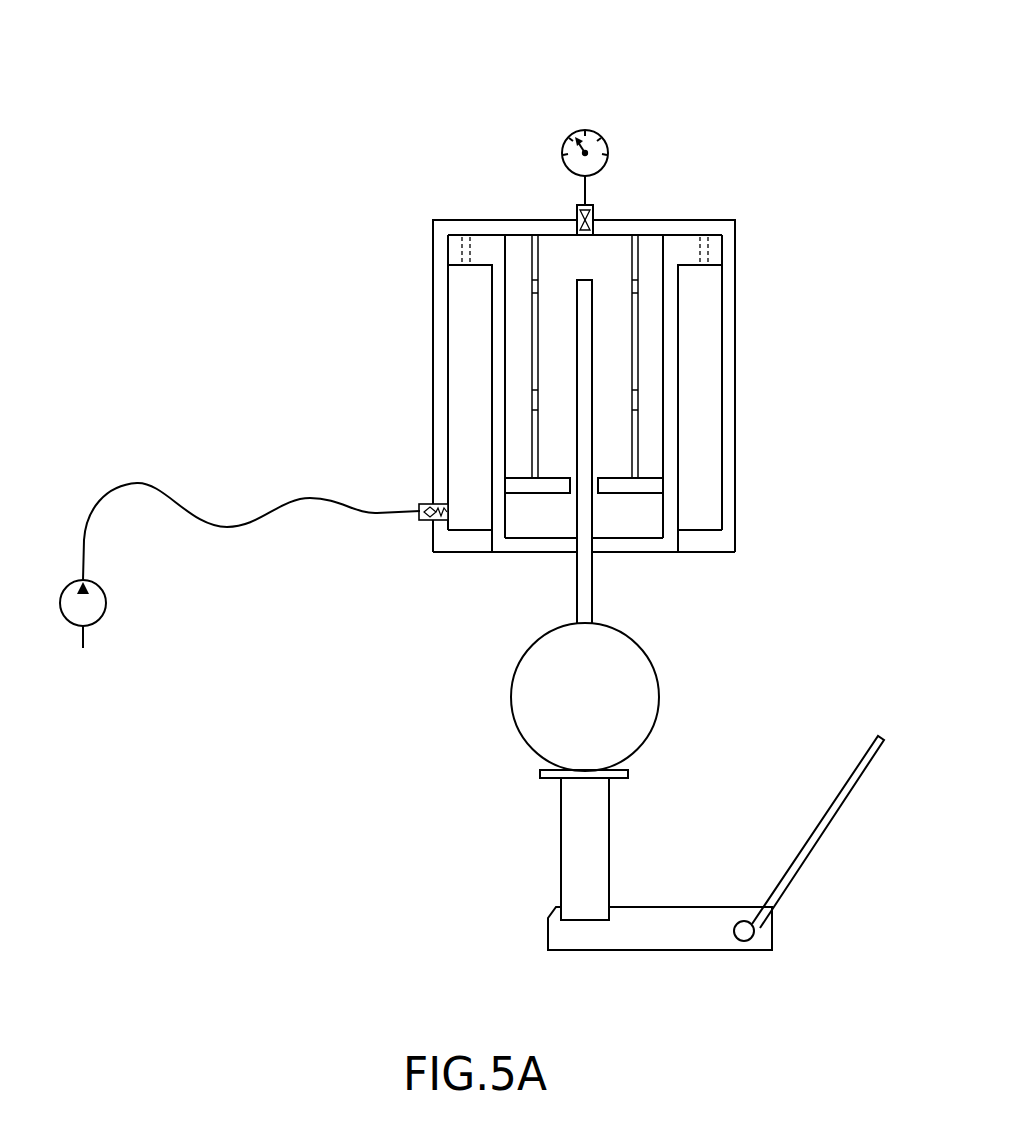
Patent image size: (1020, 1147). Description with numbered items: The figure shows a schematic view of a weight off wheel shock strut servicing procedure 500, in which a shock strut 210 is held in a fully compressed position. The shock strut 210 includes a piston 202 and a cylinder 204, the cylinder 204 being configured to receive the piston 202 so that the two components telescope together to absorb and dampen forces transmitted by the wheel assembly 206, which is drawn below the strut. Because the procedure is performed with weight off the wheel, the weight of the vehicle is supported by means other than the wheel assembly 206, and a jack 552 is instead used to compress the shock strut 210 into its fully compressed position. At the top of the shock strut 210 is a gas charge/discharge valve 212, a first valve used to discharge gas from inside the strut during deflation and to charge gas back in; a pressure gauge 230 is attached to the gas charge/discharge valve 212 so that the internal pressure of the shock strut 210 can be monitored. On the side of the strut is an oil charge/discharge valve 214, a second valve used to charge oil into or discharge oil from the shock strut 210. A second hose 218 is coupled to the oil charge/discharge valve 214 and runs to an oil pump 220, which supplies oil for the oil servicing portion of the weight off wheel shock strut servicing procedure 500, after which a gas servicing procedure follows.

The weight off wheel shock strut servicing procedure 500 is at (330, 94).
The piston 202 is at (678, 353).
The cylinder 204 is at (735, 418).
The shock strut 210 is at (735, 537).
The gas charge/discharge valve 212 is at (574, 217).
The oil charge/discharge valve 214 is at (423, 522).
The second hose 218 is at (163, 485).
The oil pump 220 is at (107, 612).
The pressure gauge 230 is at (608, 165).
The wheel assembly 206 is at (682, 665).
The jack 552 is at (670, 880).